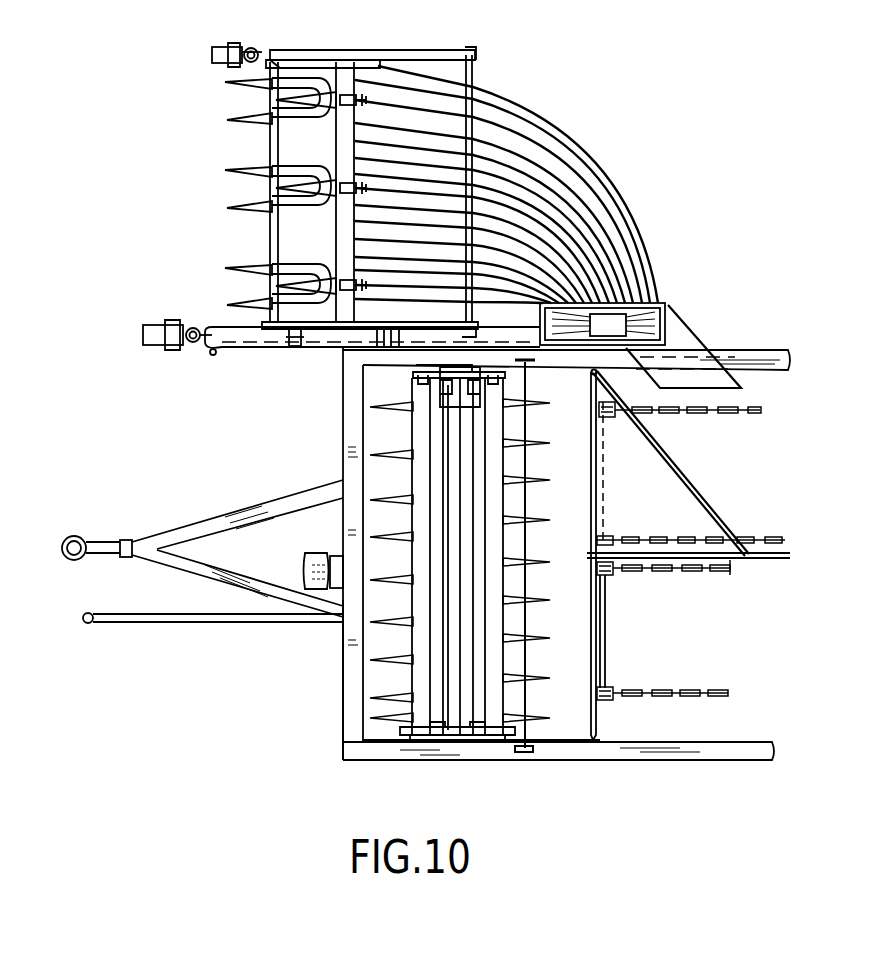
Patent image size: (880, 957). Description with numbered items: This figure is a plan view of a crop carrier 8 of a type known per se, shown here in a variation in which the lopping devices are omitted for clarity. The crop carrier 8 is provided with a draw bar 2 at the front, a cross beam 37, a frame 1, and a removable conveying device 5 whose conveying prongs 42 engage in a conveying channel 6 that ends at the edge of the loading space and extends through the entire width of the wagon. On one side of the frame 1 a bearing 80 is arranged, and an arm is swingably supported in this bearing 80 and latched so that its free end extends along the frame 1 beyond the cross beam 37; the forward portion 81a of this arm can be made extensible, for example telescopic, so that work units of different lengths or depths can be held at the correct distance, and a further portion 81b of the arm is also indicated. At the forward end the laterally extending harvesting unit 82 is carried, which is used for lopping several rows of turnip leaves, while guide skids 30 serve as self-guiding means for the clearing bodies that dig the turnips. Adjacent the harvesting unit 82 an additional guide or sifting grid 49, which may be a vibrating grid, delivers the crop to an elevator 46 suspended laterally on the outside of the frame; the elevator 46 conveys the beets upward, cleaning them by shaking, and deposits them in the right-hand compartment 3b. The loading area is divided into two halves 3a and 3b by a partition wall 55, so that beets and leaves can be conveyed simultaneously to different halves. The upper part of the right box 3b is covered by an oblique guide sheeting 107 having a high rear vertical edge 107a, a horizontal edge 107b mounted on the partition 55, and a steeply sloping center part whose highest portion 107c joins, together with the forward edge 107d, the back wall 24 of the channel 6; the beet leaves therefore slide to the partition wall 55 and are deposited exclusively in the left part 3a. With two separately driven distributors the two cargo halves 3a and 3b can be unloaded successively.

The frame 1 is at (784, 362).
The draw bar 2 is at (192, 528).
The left part of the crop carrier 3a is at (684, 663).
The right-hand compartment 3b is at (737, 492).
The conveying device 5 is at (459, 585).
The conveying channel 6 is at (573, 646).
The crop carrier 8 is at (333, 444).
The back wall of channel 24 is at (590, 458).
The guide skids 30 is at (246, 126).
The cross beam 37 is at (346, 684).
The conveying prongs 42 is at (531, 565).
The elevator 46 is at (680, 314).
The guide or sifting grid 49 is at (533, 138).
The partition wall 55 is at (733, 566).
The bearing 80 is at (379, 349).
The forward portion of arm 81a is at (241, 348).
The beam bracket 81b is at (293, 348).
The harvesting unit 82 is at (382, 42).
The guide sheeting 107 is at (653, 508).
The rear vertical edge 107a is at (654, 441).
The horizontal edge 107b is at (645, 566).
The highest portion of center part 107c is at (598, 373).
The forward edge 107d is at (588, 491).